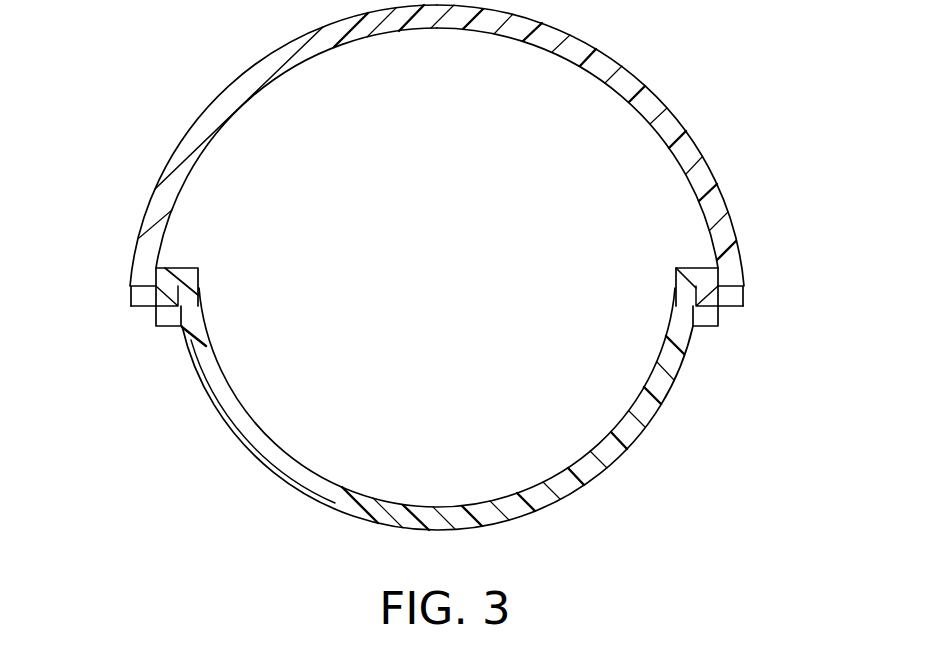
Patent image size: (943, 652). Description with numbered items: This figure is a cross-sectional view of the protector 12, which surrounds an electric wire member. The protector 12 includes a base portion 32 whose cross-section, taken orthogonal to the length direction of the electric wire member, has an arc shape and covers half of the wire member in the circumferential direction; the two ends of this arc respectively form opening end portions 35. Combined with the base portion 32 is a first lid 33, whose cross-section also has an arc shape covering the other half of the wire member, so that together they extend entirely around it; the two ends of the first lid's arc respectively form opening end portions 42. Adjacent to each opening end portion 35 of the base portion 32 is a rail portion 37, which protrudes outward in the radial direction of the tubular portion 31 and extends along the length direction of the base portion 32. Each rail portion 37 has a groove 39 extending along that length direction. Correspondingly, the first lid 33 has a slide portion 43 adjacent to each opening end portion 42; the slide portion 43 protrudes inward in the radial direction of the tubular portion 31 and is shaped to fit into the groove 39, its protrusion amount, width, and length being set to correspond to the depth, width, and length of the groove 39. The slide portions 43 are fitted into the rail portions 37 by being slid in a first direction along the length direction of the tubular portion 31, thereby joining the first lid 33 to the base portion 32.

The protector 12 is at (747, 78).
The tubular portion 31 is at (664, 92).
The base portion 32 is at (660, 406).
The first lid 33 is at (253, 66).
The opening end portion 35 is at (184, 268).
The rail portion 37 is at (133, 292).
The groove 39 is at (178, 296).
The opening end portion 42 is at (143, 307).
The slide portion 43 is at (170, 327).